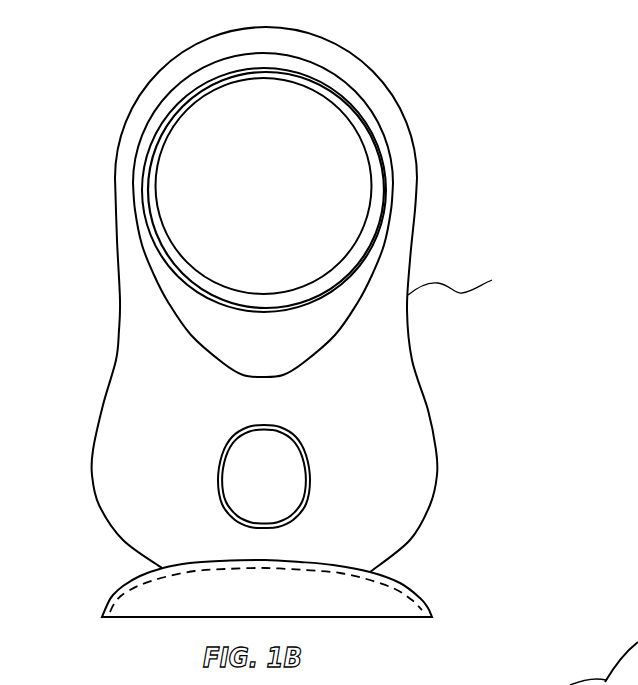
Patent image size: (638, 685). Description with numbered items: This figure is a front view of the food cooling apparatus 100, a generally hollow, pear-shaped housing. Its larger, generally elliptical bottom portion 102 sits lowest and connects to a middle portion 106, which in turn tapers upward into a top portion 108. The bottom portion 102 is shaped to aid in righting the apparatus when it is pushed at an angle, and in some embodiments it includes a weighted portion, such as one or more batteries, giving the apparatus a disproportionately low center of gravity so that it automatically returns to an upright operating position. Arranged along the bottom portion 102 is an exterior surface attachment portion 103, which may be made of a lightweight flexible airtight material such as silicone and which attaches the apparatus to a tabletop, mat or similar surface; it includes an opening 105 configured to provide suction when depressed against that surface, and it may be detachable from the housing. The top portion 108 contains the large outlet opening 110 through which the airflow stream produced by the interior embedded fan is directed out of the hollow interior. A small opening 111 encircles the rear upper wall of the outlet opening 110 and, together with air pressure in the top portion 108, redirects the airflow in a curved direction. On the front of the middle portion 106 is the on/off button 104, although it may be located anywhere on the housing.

The food cooling apparatus 100 is at (113, 62).
The bottom portion 102 is at (435, 487).
The exterior surface attachment portion 103 is at (122, 587).
The on/off button 104 is at (297, 443).
The opening 105 is at (368, 603).
The middle portion 106 is at (470, 281).
The top portion 108 is at (398, 108).
The outlet opening 110 is at (213, 163).
The small opening 111 is at (378, 235).